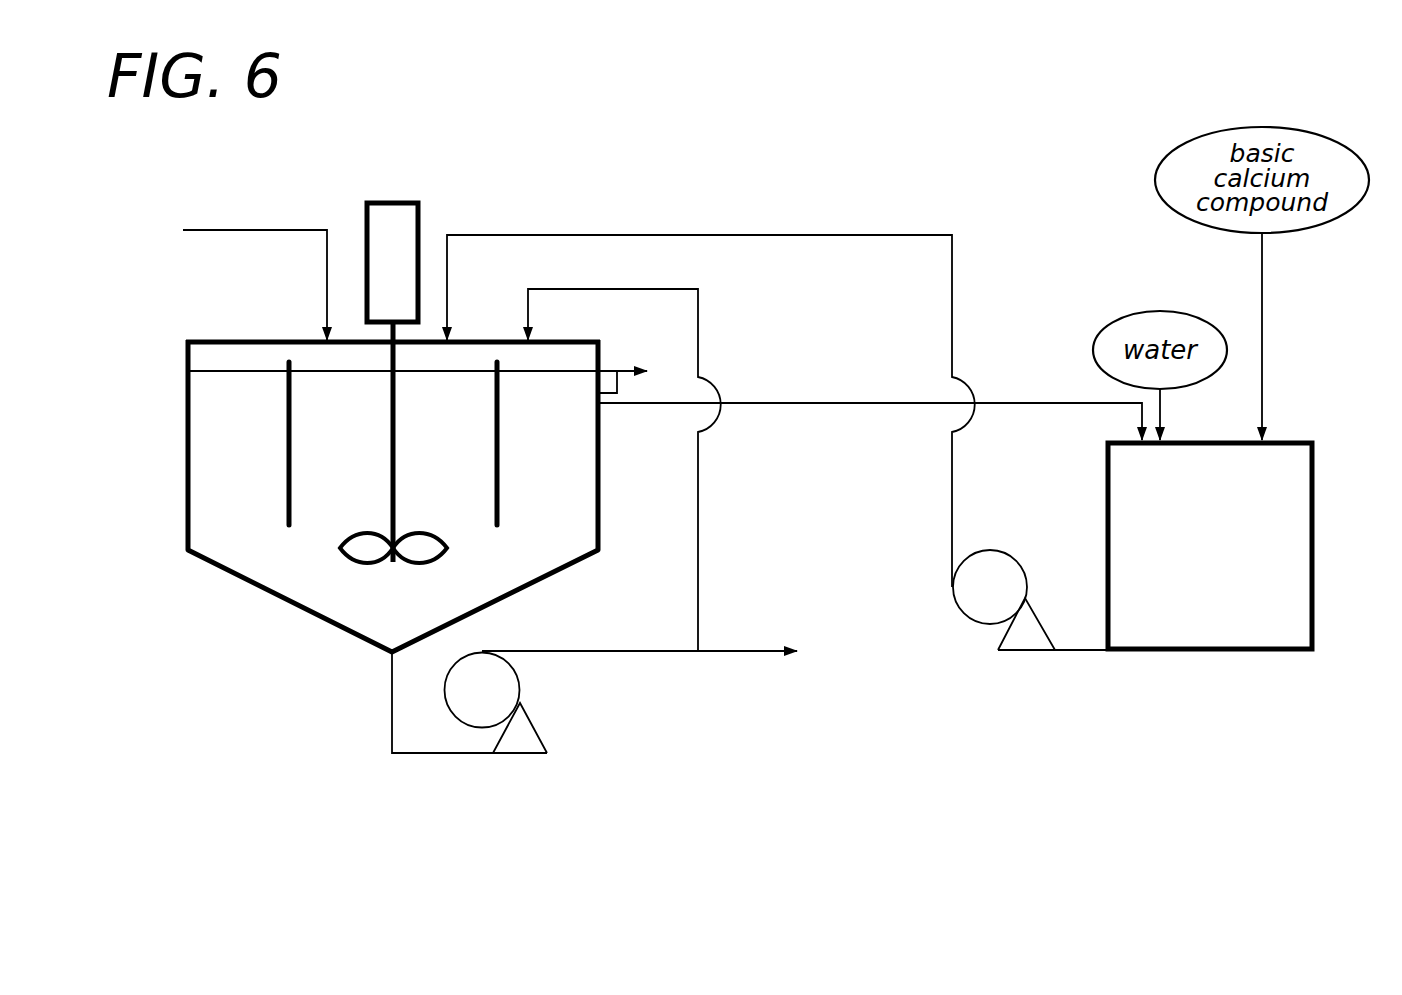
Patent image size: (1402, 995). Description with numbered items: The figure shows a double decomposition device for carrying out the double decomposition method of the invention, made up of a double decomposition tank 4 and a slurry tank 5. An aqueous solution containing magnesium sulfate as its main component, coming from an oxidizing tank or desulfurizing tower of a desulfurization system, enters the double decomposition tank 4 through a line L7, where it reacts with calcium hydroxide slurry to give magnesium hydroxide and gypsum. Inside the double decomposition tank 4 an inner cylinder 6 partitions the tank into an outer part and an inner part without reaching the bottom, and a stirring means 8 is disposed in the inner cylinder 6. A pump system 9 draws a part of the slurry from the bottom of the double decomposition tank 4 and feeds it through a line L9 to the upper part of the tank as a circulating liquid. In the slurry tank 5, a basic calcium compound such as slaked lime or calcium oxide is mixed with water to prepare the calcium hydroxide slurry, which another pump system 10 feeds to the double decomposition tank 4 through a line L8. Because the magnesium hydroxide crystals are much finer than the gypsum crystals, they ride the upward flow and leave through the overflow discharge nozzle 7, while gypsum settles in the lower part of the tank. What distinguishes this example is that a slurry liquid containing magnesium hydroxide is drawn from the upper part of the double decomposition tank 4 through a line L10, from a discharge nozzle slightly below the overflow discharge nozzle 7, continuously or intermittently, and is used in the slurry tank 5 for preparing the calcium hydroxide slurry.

The double decomposition tank 4 is at (188, 447).
The slurry tank 5 is at (1312, 505).
The inner cylinder 6 is at (497, 442).
The overflow discharge nozzle 7 is at (617, 383).
The stirring means 8 is at (395, 203).
The pump system 9 is at (473, 697).
The pump system 10 is at (982, 590).
The line L7 is at (255, 264).
The line L8 is at (711, 387).
The line L9 is at (638, 470).
The line L10 is at (871, 403).